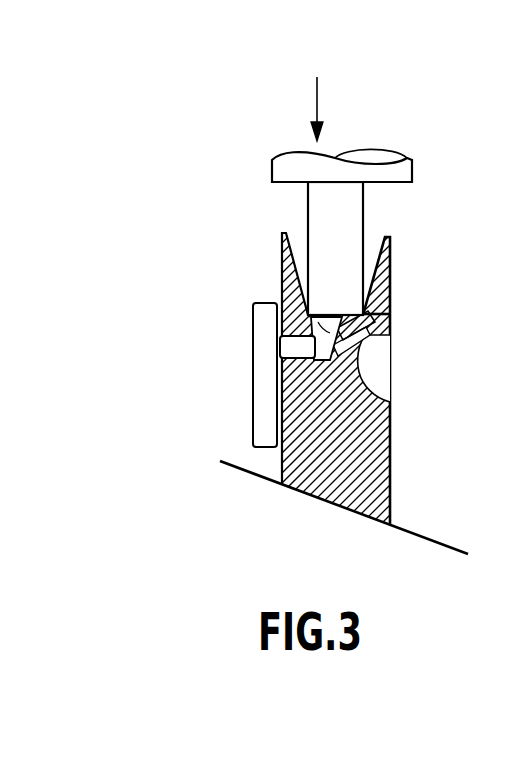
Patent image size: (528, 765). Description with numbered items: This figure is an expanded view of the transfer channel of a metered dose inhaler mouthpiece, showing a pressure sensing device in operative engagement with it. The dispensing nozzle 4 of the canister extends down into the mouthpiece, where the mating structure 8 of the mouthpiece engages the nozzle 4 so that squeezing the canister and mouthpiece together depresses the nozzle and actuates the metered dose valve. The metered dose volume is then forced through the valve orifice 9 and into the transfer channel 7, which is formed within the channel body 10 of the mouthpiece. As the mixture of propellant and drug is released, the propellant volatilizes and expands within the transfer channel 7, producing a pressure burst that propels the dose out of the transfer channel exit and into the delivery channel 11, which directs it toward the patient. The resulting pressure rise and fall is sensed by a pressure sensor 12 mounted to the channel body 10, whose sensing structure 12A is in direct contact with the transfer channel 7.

The dispensing nozzle 4 is at (413, 170).
The transfer channel 7 is at (323, 327).
The mating structure 8 is at (393, 311).
The valve orifice 9 is at (372, 346).
The channel body 10 is at (300, 490).
The delivery channel 11 is at (373, 358).
The pressure sensor 12 is at (255, 407).
The sensing structure 12A is at (287, 345).